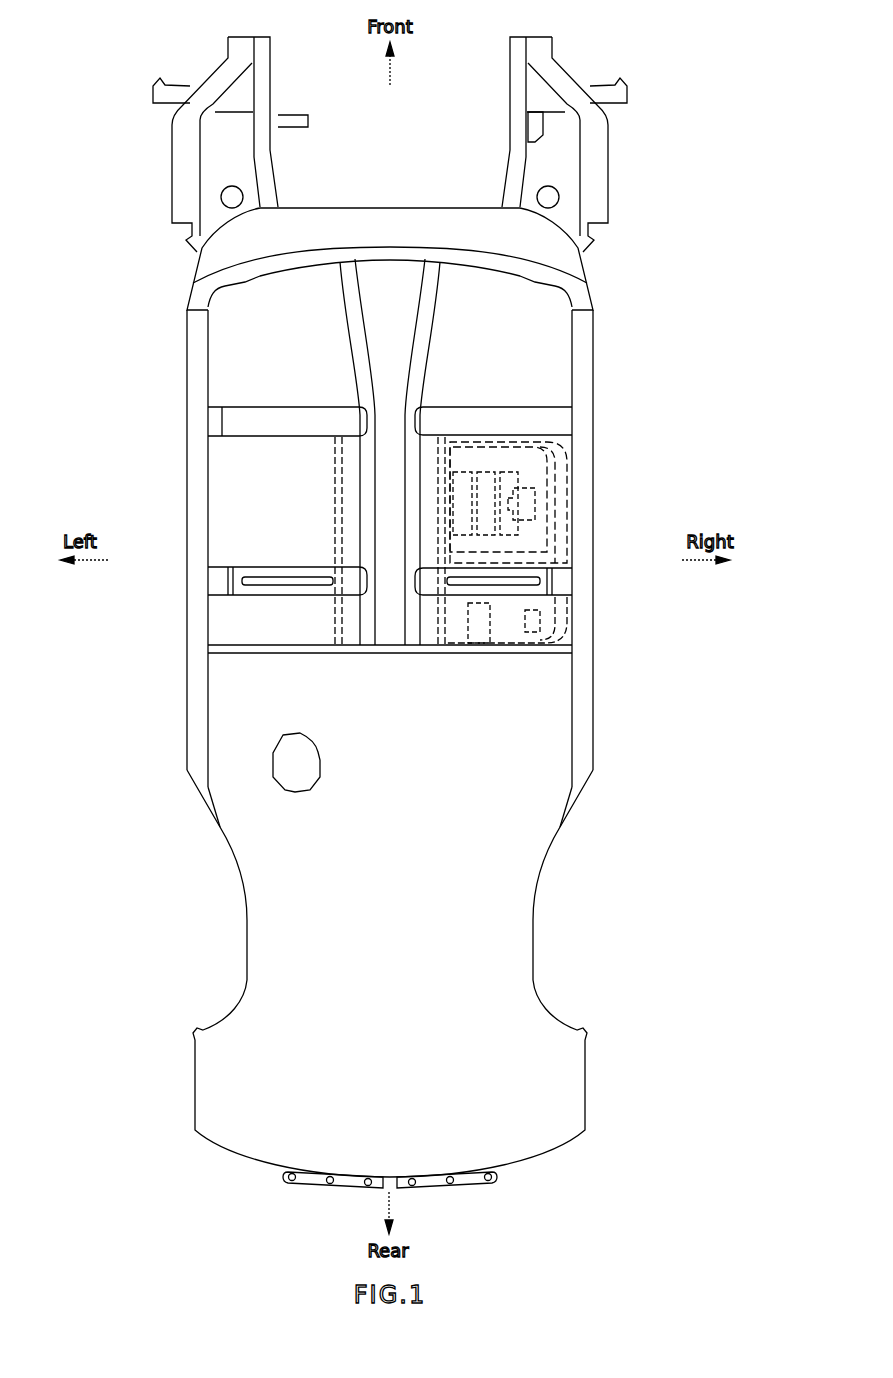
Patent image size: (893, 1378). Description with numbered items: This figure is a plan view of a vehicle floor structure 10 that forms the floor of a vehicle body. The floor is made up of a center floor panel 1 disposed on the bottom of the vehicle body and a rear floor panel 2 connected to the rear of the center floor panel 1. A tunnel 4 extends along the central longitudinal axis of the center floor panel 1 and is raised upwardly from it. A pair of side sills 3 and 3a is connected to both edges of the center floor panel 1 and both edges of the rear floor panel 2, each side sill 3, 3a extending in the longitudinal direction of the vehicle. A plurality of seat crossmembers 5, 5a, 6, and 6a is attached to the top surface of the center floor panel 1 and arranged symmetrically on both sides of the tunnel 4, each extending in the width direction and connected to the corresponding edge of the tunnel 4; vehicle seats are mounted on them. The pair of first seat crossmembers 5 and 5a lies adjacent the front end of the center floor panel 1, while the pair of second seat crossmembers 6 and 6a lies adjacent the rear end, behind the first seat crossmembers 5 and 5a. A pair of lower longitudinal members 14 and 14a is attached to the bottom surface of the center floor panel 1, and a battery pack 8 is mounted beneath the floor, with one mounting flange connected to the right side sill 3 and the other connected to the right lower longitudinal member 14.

The vehicle floor structure 10 is at (612, 297).
The center floor panel 1 is at (552, 363).
The rear floor panel 2 is at (547, 753).
The side sill 3 is at (583, 528).
The side sill 3a is at (195, 502).
The tunnel 4 is at (392, 632).
The first seat crossmember 5 is at (550, 408).
The first seat crossmember 5a is at (237, 407).
The second seat crossmember 6 is at (533, 590).
The second seat crossmember 6a is at (268, 592).
The battery pack 8 is at (573, 452).
The lower longitudinal member 14 is at (445, 620).
The lower longitudinal member 14a is at (343, 535).